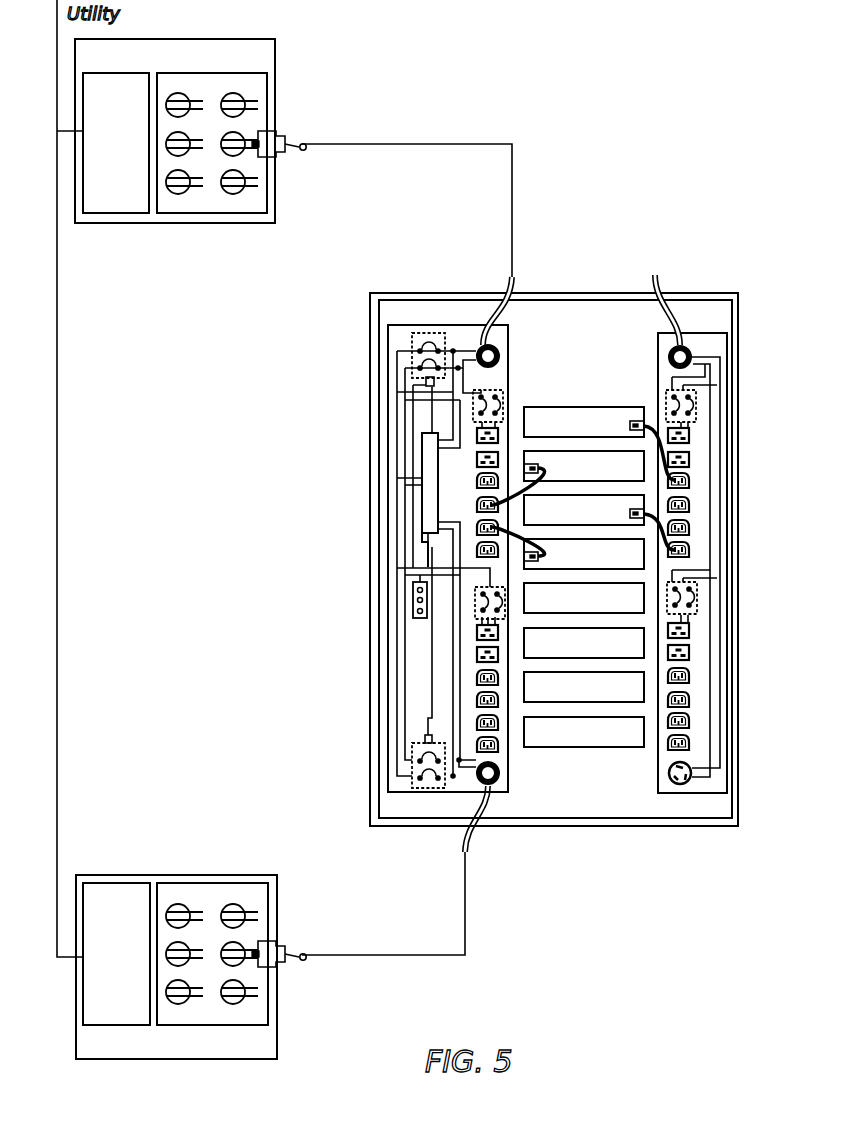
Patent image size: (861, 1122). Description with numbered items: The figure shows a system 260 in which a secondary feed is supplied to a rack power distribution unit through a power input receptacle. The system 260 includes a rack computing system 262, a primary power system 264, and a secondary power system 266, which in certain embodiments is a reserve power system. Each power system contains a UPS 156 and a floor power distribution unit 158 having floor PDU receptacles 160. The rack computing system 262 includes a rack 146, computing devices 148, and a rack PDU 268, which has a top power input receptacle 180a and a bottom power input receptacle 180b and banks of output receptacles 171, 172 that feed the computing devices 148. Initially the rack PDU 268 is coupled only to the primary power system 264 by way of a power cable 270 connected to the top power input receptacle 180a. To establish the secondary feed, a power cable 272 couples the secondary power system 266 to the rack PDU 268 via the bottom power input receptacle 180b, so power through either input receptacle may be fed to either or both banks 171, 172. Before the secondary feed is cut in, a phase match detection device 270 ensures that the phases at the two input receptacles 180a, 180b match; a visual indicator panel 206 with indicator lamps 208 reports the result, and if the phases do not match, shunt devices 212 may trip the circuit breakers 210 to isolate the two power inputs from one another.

The rack 146 is at (738, 466).
The computing devices 148 is at (584, 422).
The UPS 156 is at (116, 549).
The floor power distribution unit 158 is at (251, 208).
The floor PDU receptacle 160 is at (178, 196).
The bank of output receptacles 171 is at (509, 423).
The bank of output receptacles 172 is at (510, 753).
The top power input receptacle 180a is at (500, 354).
The bottom power input receptacle 180b is at (500, 785).
The visual indicator panel 206 is at (413, 592).
The indicator lamp 208 is at (413, 610).
The circuit breaker 210 is at (428, 333).
The shunt device 212 is at (410, 383).
The system 260 is at (642, 258).
The rack computing system 262 is at (738, 293).
The primary power system 264 is at (175, 131).
The secondary power system 266 is at (176, 967).
The rack PDU 268 is at (464, 325).
The power cable 270 is at (512, 175).
The power cable 272 is at (465, 897).